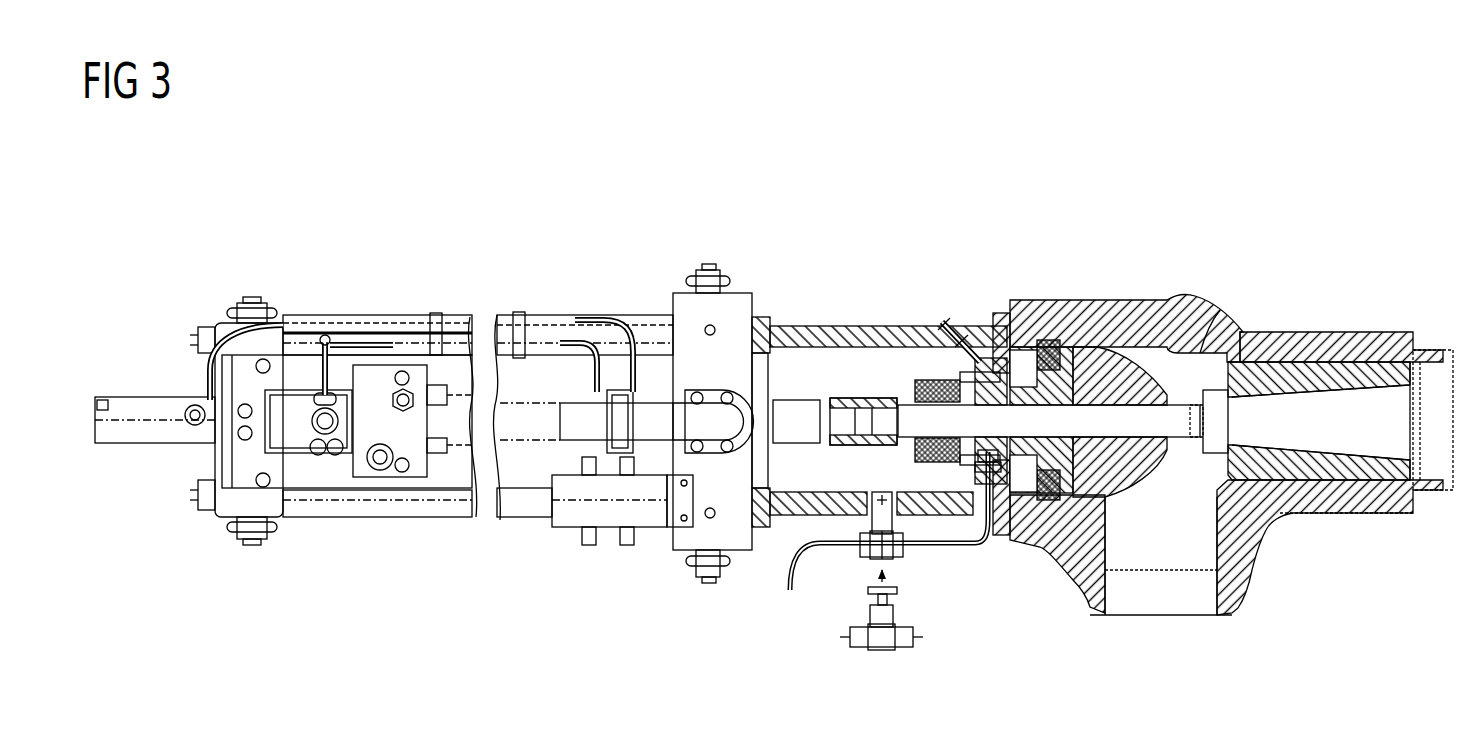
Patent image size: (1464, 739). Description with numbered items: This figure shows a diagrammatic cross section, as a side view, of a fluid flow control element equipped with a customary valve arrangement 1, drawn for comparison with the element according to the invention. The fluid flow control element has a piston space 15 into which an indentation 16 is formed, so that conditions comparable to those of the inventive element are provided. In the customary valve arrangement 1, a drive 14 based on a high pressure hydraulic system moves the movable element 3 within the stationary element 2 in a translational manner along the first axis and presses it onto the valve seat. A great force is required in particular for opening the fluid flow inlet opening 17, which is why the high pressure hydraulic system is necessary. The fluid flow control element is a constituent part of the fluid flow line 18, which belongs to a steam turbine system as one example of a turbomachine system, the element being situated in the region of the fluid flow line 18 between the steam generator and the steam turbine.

The customary valve arrangement 1 is at (1136, 356).
The stationary element 2 is at (1097, 355).
The movable element 3 is at (1177, 441).
The drive 14 is at (628, 596).
The piston space 15 is at (1162, 345).
The indentation 16 is at (1218, 312).
The fluid flow inlet opening 17 is at (1248, 418).
The fluid flow line 18 is at (1147, 552).